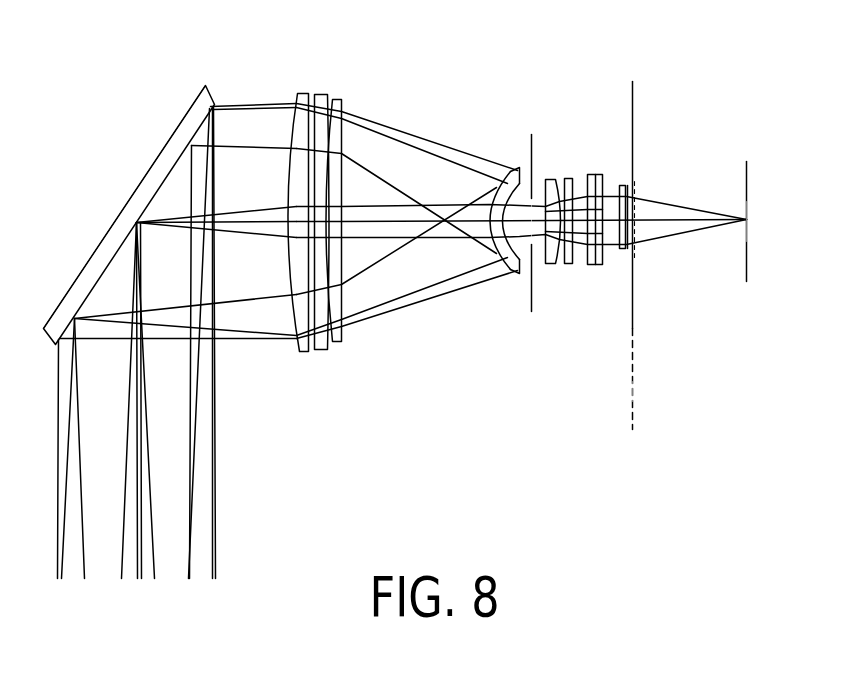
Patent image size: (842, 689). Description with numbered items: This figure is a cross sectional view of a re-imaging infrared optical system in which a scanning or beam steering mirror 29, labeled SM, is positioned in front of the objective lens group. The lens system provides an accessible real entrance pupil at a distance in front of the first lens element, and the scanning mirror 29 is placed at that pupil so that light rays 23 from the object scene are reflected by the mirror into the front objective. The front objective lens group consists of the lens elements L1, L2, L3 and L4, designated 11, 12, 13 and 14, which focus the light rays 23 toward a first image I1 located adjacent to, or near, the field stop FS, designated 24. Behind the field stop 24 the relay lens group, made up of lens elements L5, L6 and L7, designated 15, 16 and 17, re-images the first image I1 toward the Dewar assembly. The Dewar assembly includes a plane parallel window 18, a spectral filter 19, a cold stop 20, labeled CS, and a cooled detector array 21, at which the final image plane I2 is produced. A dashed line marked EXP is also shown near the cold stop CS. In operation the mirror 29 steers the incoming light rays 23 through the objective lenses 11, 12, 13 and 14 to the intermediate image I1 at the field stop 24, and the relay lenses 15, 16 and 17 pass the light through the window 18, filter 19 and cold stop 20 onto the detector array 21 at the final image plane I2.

The lens element L1 11 is at (303, 92).
The lens element L2 12 is at (323, 93).
The lens element L3 13 is at (338, 98).
The lens element L4 14 is at (506, 176).
The lens element L5 15 is at (552, 186).
The lens element L6 16 is at (568, 177).
The lens element L7 17 is at (597, 175).
The plane parallel window 18 is at (597, 266).
The spectral filter 19 is at (623, 258).
The cold stop 20 is at (635, 296).
The cooled detector array 21 is at (748, 246).
The light rays 23 is at (210, 484).
The field stop 24 is at (530, 290).
The scanning or beam steering mirror 29 is at (95, 252).
The scanning mirror SM is at (151, 167).
The field stop FS is at (531, 148).
The cold stop CS is at (635, 103).
The exit pupil EXP is at (635, 391).
The first image I1 is at (538, 275).
The final image plane I2 is at (752, 264).